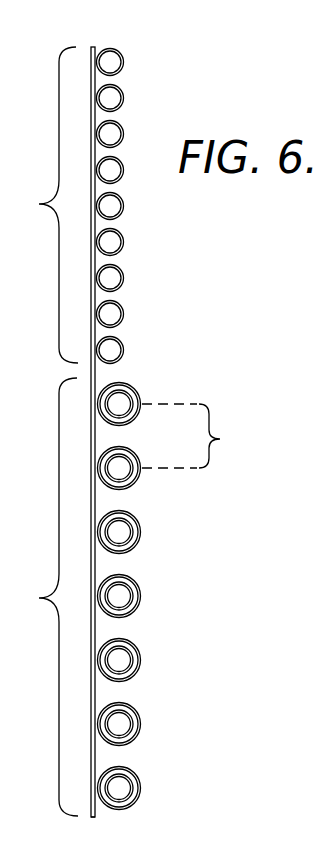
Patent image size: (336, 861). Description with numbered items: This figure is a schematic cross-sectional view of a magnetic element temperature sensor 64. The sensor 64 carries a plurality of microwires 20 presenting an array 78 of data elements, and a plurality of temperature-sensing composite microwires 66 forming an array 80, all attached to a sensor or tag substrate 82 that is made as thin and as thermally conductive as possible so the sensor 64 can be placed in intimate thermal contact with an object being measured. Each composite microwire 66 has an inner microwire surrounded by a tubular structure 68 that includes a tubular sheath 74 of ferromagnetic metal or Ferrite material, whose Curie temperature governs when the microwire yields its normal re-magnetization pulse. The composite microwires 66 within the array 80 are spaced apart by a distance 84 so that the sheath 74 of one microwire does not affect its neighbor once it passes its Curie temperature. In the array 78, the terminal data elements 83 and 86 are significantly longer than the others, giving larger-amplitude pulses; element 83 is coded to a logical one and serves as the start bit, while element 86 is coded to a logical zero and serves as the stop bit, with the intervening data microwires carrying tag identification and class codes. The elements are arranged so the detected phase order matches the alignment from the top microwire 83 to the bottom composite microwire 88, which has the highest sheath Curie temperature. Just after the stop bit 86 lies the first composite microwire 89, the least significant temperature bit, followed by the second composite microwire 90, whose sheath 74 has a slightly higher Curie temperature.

The microwire 20 is at (193, 243).
The magnetic element temperature sensor 64 is at (176, 88).
The composite temperature-sensing microwire 66 is at (185, 625).
The surrounding tubular structure 68 is at (141, 677).
The tubular sheath 74 is at (137, 584).
The array of data elements 78 is at (46, 205).
The array of composite microwires 80 is at (46, 597).
The sensor or tag substrate 82 is at (95, 818).
The terminal data element 83 is at (121, 55).
The spacing distance 84 is at (197, 436).
The terminal data element 86 is at (122, 343).
The composite microwire 88 is at (139, 783).
The first composite microwire 89 is at (134, 388).
The second composite microwire 90 is at (136, 481).